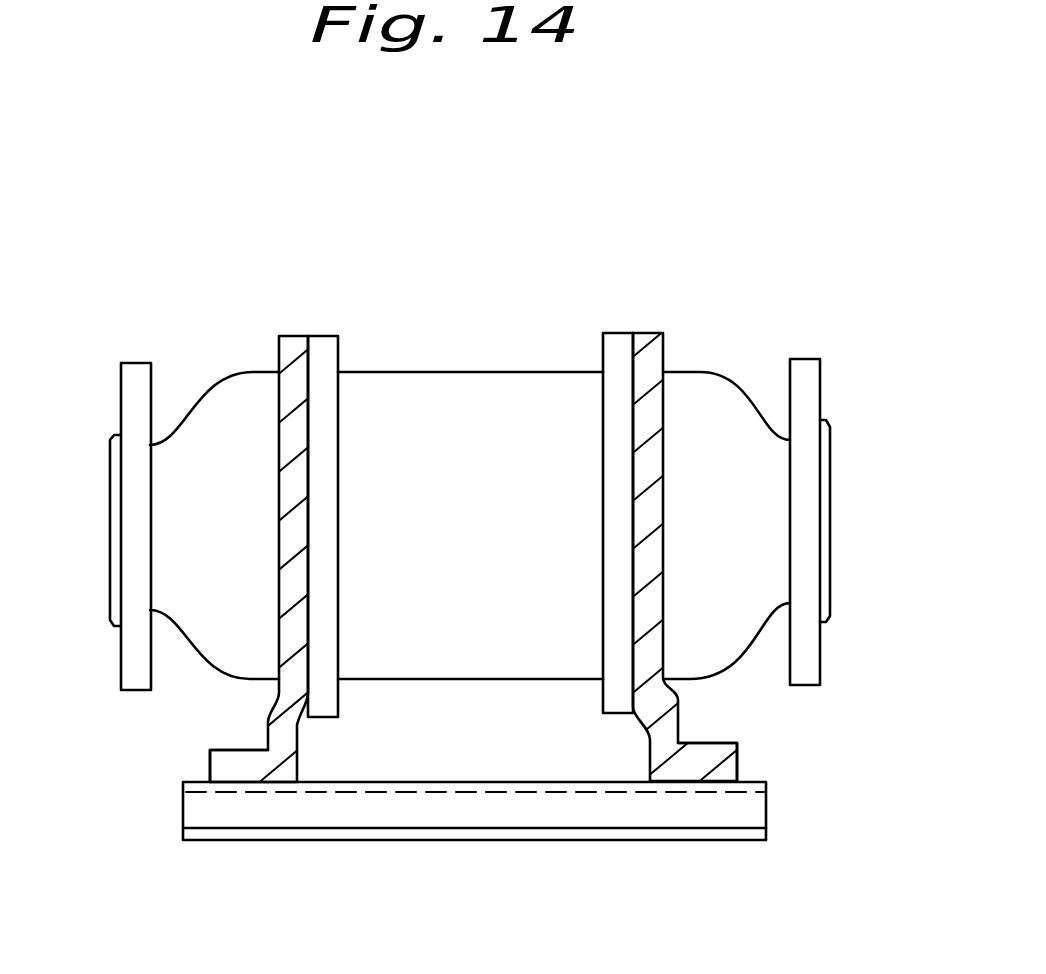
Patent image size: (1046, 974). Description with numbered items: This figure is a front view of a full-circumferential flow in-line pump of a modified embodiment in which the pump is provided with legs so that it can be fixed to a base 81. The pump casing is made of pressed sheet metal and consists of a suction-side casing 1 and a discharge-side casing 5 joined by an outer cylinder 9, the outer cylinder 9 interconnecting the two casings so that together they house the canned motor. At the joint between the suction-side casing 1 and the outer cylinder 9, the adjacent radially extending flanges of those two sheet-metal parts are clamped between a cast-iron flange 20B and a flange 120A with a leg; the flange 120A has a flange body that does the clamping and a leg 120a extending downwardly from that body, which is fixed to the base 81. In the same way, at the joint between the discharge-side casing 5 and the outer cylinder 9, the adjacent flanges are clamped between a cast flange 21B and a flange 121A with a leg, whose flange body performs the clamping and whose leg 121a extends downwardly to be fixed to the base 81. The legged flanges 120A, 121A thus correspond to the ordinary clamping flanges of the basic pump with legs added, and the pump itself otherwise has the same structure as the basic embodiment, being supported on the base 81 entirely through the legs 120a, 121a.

The suction-side casing 1 is at (742, 405).
The discharge-side casing 5 is at (207, 387).
The outer cylinder 9 is at (462, 371).
The flange 21B is at (327, 468).
The flange 20B is at (612, 444).
The flange with a leg 121A is at (293, 643).
The leg 121a is at (283, 730).
The flange with a leg 120A is at (653, 603).
The leg 120a is at (672, 730).
The base 81 is at (463, 810).